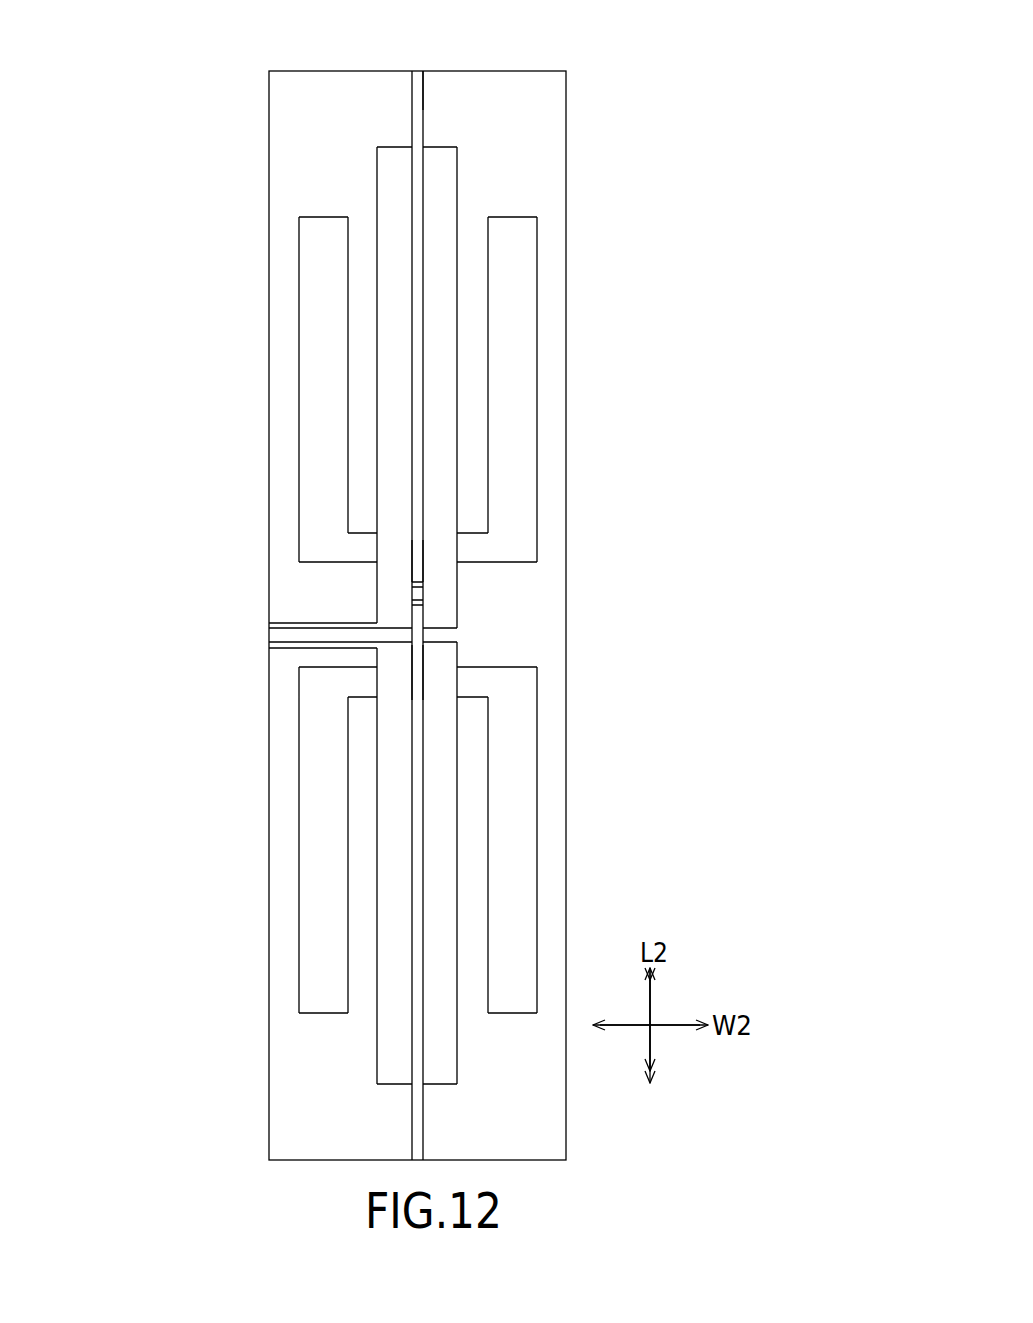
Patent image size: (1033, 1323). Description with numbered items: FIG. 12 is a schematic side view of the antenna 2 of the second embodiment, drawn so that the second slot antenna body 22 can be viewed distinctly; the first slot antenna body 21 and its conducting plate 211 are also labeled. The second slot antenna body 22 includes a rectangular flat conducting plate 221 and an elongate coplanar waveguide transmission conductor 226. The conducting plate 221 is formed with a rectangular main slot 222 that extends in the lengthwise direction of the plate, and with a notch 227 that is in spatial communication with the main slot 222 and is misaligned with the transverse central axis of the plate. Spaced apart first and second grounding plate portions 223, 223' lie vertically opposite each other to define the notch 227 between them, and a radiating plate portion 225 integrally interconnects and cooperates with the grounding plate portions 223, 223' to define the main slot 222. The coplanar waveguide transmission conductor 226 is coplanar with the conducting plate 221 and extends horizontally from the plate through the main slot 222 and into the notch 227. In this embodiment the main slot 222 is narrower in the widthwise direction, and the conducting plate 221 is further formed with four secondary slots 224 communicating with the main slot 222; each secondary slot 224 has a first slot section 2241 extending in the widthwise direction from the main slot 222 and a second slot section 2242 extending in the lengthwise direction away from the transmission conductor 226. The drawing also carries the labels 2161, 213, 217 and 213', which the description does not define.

The antenna 2 is at (207, 57).
The second slot antenna body 22 is at (300, 63).
The conducting plate 221 is at (568, 120).
The first slot antenna body 21 is at (418, 68).
The conducting plate 211 is at (425, 100).
The main slot 222 is at (437, 180).
The radiating plate portion 225 is at (552, 208).
The secondary slot 224 is at (668, 383).
The second slot section 2242 is at (512, 352).
The first slot section 2241 is at (478, 548).
The second grounding plate portion 223' is at (281, 581).
The feed line 2161 is at (269, 633).
The notch 227 is at (268, 647).
The first grounding plate portion 223 is at (361, 701).
The upper slot section 213 is at (531, 569).
The slot gap section 217 is at (418, 593).
The coplanar waveguide transmission conductor 226 is at (432, 634).
The lower slot section 213' is at (533, 678).